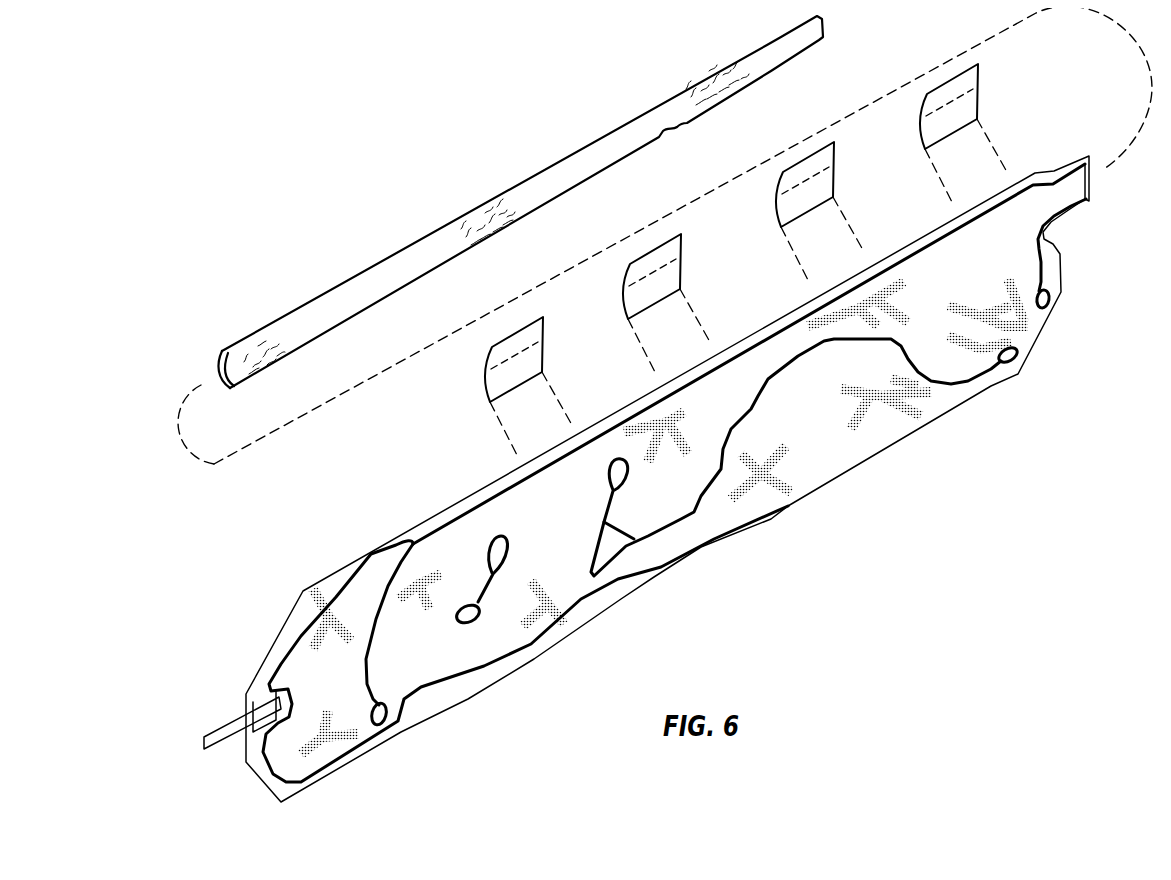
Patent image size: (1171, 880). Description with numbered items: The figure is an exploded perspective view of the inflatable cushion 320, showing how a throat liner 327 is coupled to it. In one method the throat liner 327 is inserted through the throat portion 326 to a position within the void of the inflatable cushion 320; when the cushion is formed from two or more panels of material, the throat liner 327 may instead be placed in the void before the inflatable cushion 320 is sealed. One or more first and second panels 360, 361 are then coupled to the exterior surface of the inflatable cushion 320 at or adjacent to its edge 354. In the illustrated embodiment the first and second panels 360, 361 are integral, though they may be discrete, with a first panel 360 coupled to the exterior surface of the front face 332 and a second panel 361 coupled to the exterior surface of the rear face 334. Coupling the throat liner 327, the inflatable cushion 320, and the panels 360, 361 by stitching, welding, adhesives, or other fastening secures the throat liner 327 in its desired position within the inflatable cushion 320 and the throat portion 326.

The inflatable cushion 320 is at (866, 490).
The throat portion 326 is at (1060, 225).
The throat liner 327 is at (530, 154).
The front face 332 is at (465, 650).
The rear face 334 is at (520, 602).
The edge 354 is at (423, 520).
The first panel 360 is at (524, 338).
The second panel 361 is at (524, 364).